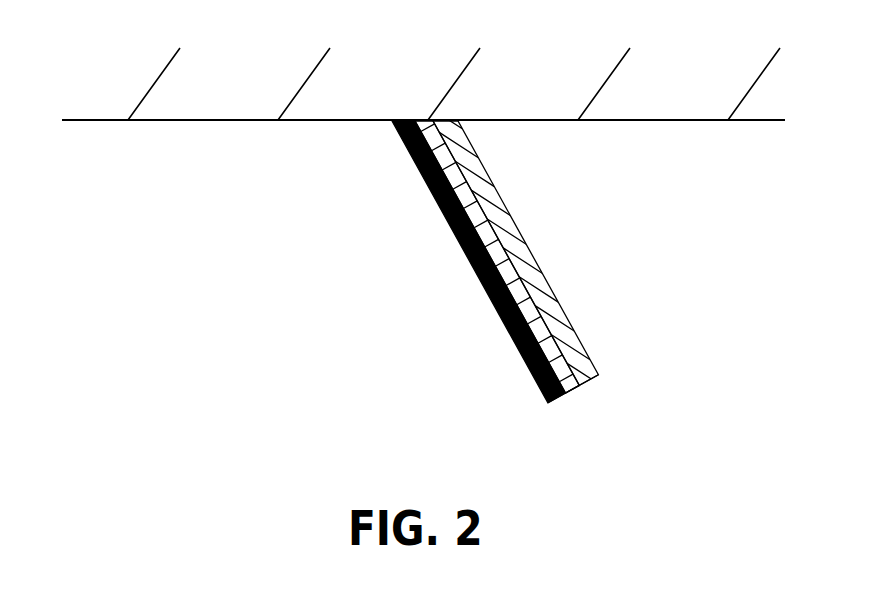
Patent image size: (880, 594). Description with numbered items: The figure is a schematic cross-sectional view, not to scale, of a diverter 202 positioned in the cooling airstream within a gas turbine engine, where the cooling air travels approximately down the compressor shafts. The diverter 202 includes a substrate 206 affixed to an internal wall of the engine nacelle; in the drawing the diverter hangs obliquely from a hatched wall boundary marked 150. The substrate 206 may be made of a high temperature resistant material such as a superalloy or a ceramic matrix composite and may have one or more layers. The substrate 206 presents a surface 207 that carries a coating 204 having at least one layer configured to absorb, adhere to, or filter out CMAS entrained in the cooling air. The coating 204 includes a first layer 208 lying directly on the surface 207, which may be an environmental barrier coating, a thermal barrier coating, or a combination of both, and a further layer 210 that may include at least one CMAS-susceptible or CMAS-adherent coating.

The surface / wall 150 is at (112, 120).
The diverter 202 is at (496, 295).
The coating 204 is at (568, 425).
The substrate 206 is at (560, 308).
The surface 207 is at (577, 378).
The first layer 208 is at (477, 220).
The layer 210 is at (432, 185).